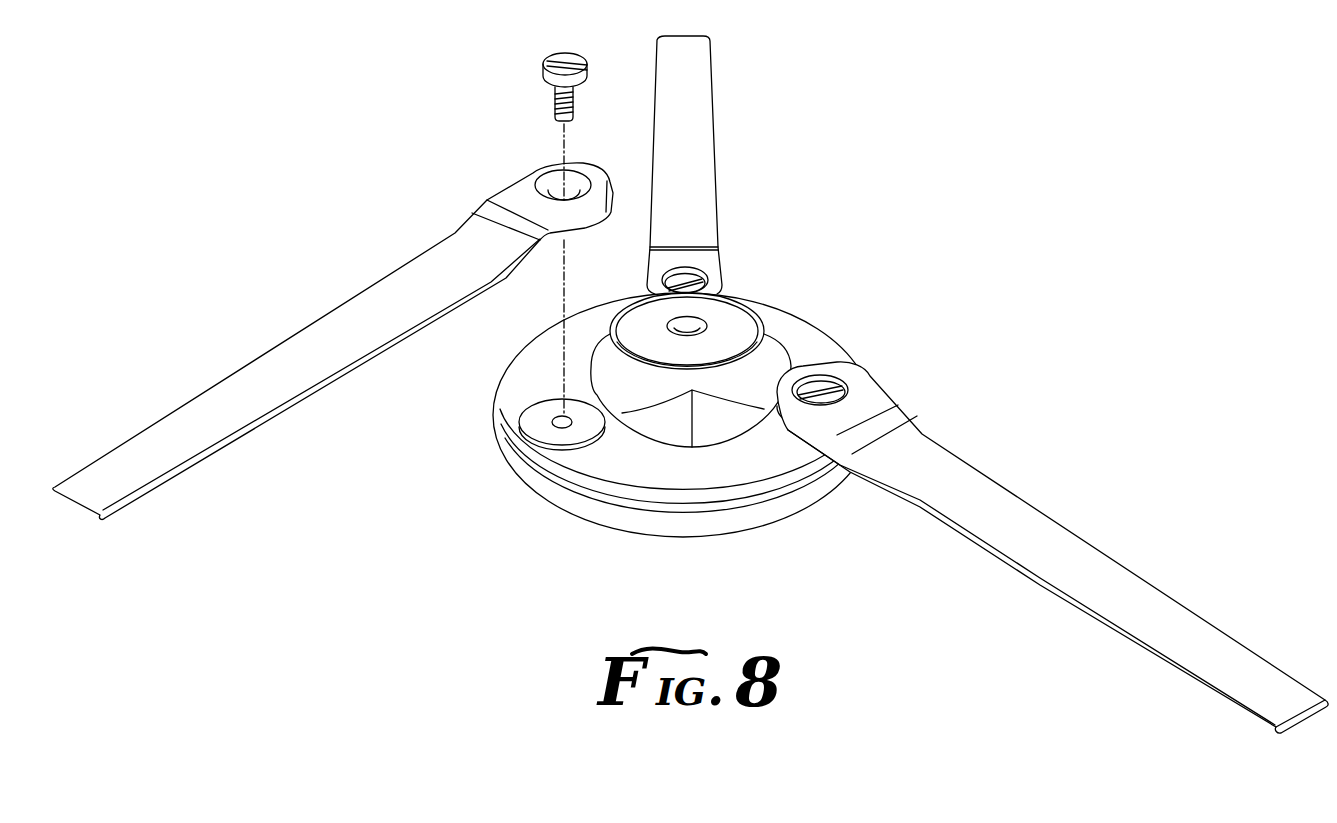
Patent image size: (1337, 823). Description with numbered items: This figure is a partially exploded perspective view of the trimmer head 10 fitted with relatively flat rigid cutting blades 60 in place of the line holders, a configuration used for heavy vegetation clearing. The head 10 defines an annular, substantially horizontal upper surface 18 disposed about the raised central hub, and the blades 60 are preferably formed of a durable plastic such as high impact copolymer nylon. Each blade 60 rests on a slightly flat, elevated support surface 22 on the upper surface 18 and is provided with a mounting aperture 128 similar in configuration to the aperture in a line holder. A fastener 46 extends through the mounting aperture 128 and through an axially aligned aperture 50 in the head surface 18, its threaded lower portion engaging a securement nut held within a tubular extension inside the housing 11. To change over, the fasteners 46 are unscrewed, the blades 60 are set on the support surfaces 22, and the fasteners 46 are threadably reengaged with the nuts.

The trimmer head 10 is at (690, 384).
The housing 11 is at (872, 376).
The upper surface 18 is at (782, 317).
The support surface 22 is at (618, 296).
The fastener 46 is at (543, 64).
The aperture 50 is at (557, 415).
The cutting blade 60 is at (690, 384).
The mounting aperture 128 is at (548, 186).